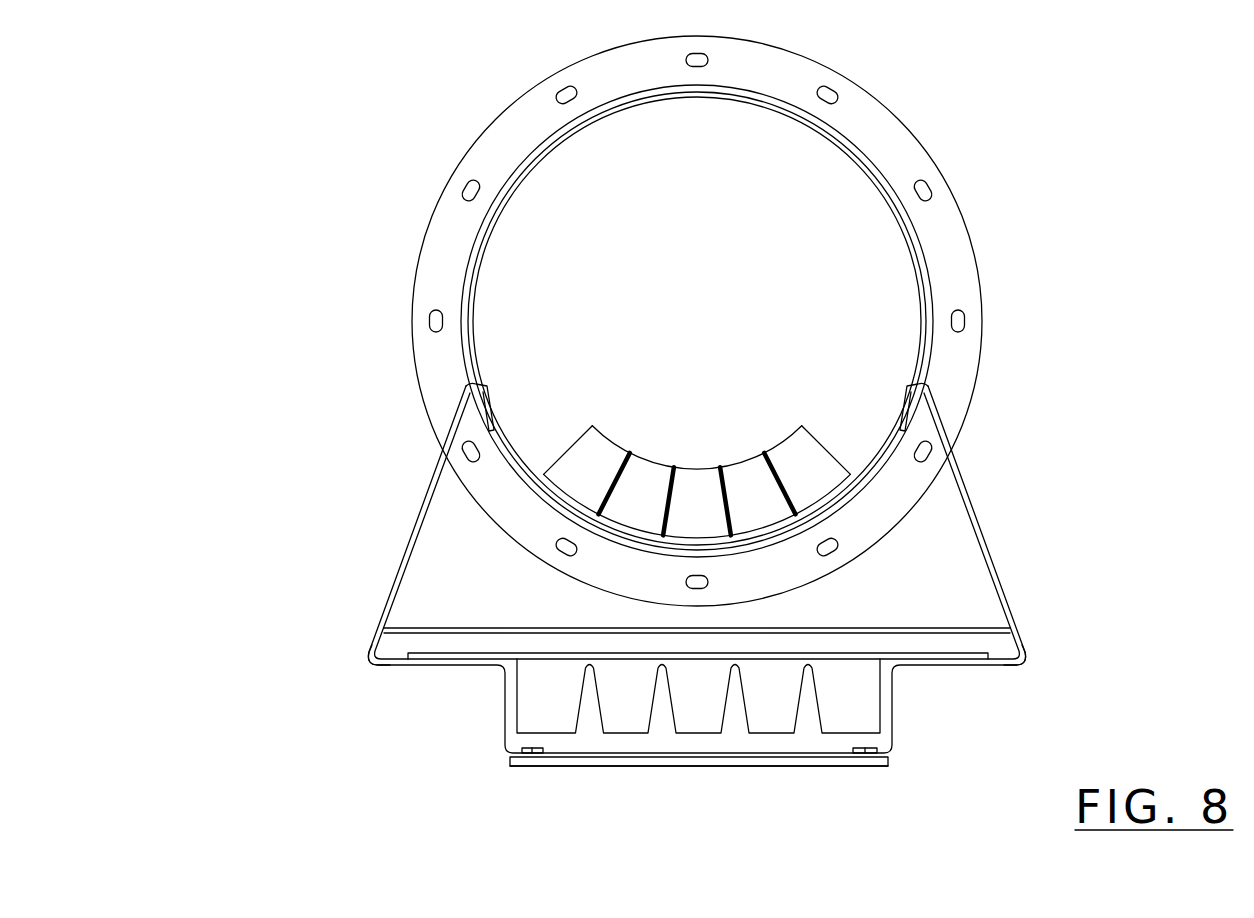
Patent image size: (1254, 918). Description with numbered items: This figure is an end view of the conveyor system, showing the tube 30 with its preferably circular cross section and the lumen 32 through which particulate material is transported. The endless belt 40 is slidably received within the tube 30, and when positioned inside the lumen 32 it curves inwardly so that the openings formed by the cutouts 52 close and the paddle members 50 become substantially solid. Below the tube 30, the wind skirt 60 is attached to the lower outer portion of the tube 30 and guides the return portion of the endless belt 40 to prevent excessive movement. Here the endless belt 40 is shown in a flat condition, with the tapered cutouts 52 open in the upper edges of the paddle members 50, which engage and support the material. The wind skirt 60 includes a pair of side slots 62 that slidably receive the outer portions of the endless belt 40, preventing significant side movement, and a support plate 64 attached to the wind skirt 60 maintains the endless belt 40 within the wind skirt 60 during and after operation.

The tube 30 is at (876, 159).
The lumen 32 is at (527, 178).
The endless belt 40 is at (462, 655).
The paddle members 50 is at (533, 713).
The V-shaped cutouts 52 is at (810, 742).
The wind skirt 60 is at (1005, 560).
The side slots 62 is at (387, 648).
The support plate 64 is at (665, 766).